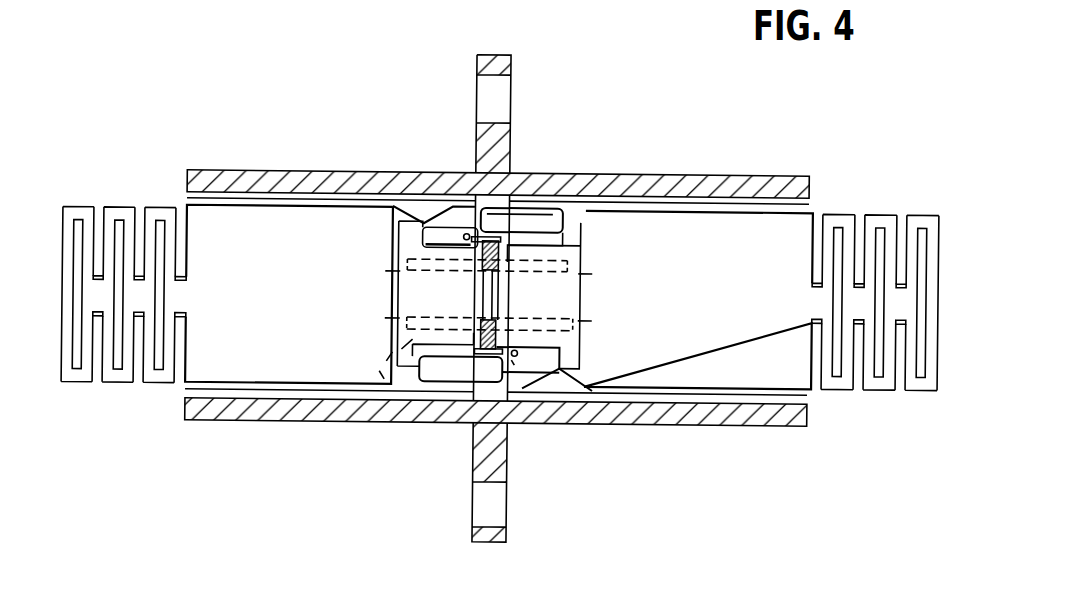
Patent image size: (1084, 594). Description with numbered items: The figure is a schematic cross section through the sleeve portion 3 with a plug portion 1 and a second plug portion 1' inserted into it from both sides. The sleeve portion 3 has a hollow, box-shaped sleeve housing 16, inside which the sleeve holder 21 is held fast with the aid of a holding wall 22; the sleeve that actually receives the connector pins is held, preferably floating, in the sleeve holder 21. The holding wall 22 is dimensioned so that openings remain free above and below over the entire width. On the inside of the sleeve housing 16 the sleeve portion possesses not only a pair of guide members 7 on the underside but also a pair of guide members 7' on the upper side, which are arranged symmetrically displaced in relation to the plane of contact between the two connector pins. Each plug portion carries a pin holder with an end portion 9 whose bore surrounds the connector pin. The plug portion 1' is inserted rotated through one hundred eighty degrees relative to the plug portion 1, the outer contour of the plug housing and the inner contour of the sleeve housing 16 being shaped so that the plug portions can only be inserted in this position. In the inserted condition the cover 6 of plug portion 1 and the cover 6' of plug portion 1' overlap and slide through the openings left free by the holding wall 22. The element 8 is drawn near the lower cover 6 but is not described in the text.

The plug portion 1 is at (761, 301).
The plug portion 1' is at (227, 293).
The sleeve portion 3 is at (637, 84).
The cover 6 is at (488, 407).
The cover 6' is at (522, 187).
The guide members 7 is at (556, 418).
The guide members 7' is at (419, 154).
The pawl 8 is at (550, 360).
The end portion 9 is at (575, 227).
The sleeve housing 16 is at (743, 187).
The sleeve holder 21 is at (394, 352).
The holding wall 22 is at (490, 240).